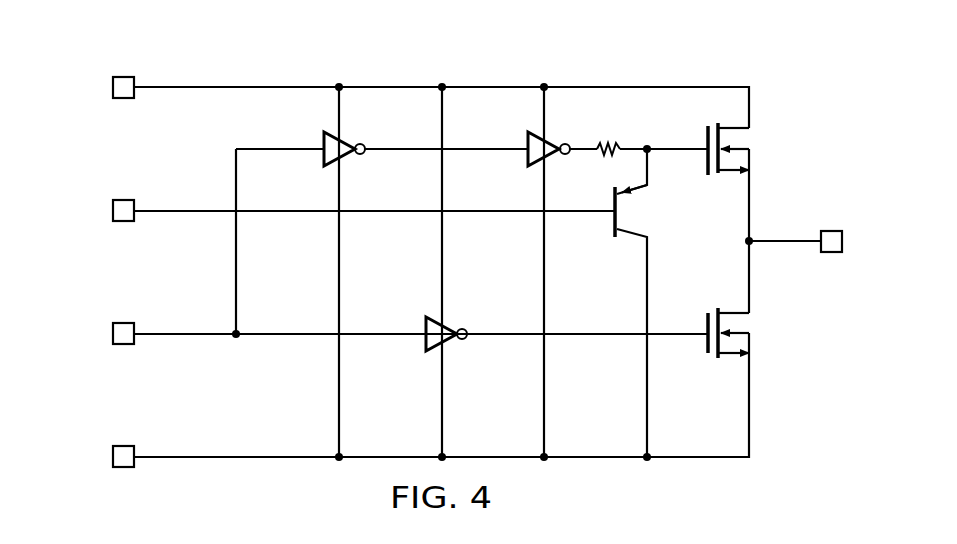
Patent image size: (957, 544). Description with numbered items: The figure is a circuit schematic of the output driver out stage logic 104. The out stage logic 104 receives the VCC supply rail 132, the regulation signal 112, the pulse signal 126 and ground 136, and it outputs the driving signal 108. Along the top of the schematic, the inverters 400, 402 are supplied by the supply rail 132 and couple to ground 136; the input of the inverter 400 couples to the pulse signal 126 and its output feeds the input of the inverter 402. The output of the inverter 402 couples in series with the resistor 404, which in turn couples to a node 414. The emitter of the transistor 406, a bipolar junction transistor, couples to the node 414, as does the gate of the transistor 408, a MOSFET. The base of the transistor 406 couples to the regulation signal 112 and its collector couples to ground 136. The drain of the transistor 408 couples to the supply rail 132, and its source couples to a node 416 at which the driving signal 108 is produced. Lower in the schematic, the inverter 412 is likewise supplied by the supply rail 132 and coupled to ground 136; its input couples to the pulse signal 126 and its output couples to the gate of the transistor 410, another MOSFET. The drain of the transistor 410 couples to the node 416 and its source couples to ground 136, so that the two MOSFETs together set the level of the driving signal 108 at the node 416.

The out stage logic 104 is at (294, 55).
The supply rail 132 is at (122, 76).
The regulation signal 112 is at (123, 199).
The pulse signal 126 is at (122, 345).
The ground 136 is at (122, 468).
The driving signal 108 is at (832, 230).
The inverter 400 is at (322, 142).
The inverter 402 is at (528, 143).
The resistor 404 is at (610, 142).
The transistor 406 is at (632, 234).
The transistor 408 is at (708, 162).
The transistor 410 is at (708, 345).
The inverter 412 is at (426, 343).
The node 414 is at (652, 145).
The node 416 is at (757, 235).